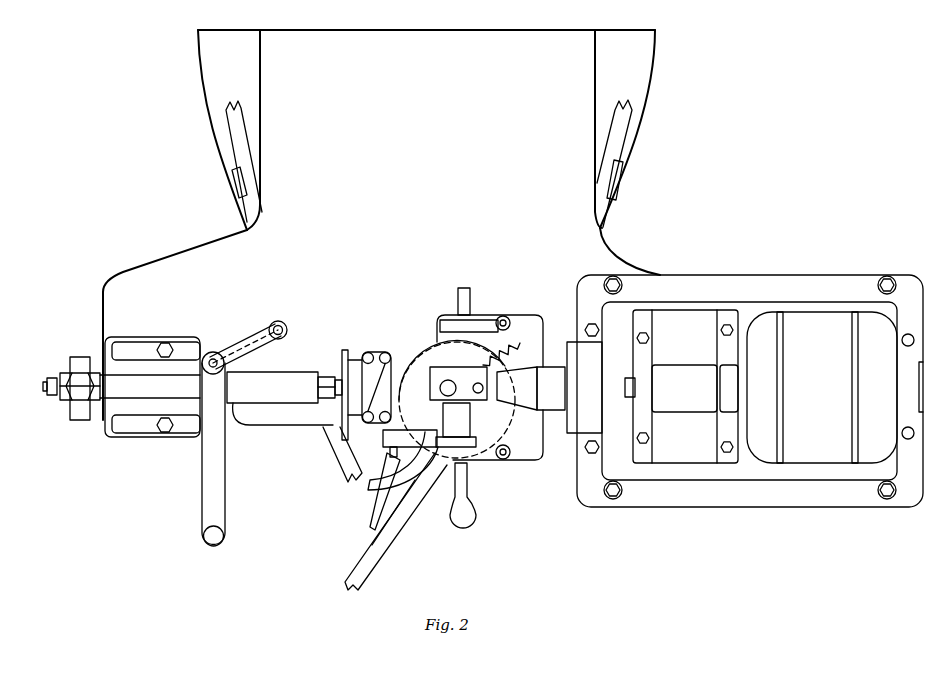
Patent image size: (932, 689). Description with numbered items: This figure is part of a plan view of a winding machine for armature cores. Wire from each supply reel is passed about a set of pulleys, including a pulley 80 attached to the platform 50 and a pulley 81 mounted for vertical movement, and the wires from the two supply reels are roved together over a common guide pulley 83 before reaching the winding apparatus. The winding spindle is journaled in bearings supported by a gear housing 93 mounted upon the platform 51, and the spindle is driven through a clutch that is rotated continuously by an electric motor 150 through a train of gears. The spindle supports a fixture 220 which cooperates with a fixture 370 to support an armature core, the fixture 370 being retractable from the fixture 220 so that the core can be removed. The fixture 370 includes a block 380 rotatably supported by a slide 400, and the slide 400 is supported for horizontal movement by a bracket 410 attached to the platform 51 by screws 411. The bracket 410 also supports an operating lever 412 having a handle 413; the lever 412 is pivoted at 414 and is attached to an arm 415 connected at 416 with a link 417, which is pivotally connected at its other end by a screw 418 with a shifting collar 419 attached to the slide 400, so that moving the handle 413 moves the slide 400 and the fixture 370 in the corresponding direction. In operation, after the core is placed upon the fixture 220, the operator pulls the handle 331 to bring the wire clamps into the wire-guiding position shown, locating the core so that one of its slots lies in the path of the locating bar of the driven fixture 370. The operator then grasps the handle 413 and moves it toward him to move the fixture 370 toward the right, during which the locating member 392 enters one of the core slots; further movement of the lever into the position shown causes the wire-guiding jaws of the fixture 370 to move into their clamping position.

The platform 50 is at (200, 50).
The platform 51 is at (192, 250).
The pulley 80 is at (232, 152).
The gear housing 93 is at (778, 482).
The electric motor 150 is at (803, 312).
The fixture 220 is at (474, 366).
The fixture 370 is at (367, 363).
The block 380 is at (342, 358).
The locating member 392 is at (401, 387).
The slide 400 is at (100, 356).
The bracket 410 is at (145, 347).
The screws 411 is at (170, 347).
The operating lever 412 is at (200, 470).
The handle 413 is at (203, 542).
The pivot 414 is at (222, 353).
The arm 415 is at (260, 327).
The connection 416 is at (287, 328).
The link 417 is at (235, 373).
The screw 418 is at (78, 392).
The shifting collar 419 is at (83, 417).
The pulley 81 is at (350, 473).
The common guide pulley 83 is at (372, 567).
The handle 331 is at (478, 518).